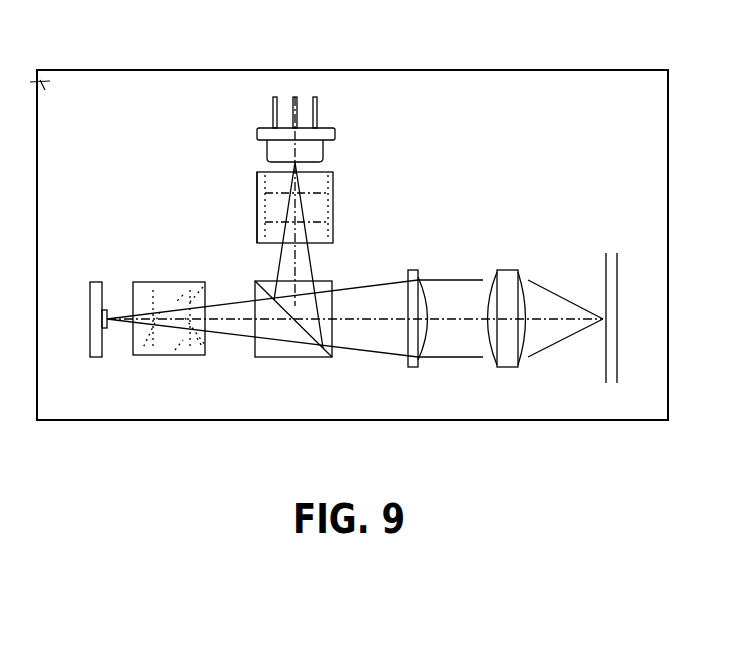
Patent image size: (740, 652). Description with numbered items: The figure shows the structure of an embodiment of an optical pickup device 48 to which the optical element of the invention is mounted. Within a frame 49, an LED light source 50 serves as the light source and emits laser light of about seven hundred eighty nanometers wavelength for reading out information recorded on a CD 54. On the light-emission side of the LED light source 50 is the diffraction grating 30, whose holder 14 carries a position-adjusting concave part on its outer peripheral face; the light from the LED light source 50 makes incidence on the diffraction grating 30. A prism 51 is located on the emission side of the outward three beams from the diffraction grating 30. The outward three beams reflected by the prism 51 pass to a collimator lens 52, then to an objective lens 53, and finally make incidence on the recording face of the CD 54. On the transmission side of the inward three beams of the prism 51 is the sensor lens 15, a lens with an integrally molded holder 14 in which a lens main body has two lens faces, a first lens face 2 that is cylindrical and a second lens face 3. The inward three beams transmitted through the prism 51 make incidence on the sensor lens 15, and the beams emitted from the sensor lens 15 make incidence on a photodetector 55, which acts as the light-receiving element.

The optical pickup device 48 is at (68, 70).
The frame 49 is at (130, 70).
The LED light source 50 is at (267, 150).
The holder 14 is at (335, 203).
The diffraction grating 30 is at (257, 222).
The sensor lens 15 is at (165, 282).
The photodetector 55 is at (96, 282).
The second lens face 3 is at (141, 349).
The first lens face 2 is at (200, 338).
The prism 51 is at (295, 357).
The collimator lens 52 is at (413, 367).
The objective lens 53 is at (505, 367).
The CD 54 is at (603, 358).